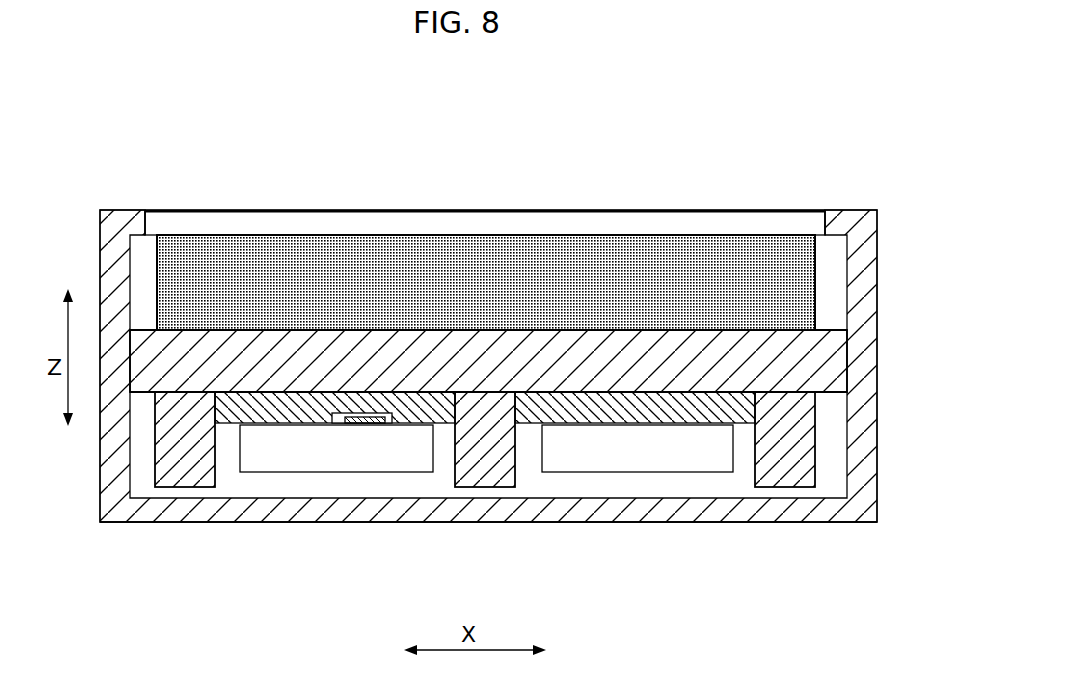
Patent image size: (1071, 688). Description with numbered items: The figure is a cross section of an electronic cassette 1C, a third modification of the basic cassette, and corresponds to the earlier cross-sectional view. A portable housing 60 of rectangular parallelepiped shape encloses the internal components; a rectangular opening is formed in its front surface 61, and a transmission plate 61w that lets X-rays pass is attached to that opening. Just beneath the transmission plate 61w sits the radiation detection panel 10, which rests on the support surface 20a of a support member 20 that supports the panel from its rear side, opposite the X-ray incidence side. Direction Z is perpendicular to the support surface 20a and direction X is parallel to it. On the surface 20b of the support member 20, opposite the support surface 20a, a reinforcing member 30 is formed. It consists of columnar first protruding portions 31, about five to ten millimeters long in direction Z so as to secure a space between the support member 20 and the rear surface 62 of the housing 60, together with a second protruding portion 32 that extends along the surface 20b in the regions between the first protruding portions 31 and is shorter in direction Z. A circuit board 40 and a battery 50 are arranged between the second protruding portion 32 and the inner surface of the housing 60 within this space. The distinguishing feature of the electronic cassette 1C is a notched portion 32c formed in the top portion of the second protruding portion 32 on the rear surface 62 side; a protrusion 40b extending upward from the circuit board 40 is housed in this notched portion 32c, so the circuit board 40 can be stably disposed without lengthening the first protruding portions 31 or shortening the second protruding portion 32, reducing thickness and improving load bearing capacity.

The electronic cassette 1C is at (567, 150).
The radiation detection panel 10 is at (536, 270).
The support member 20 is at (838, 371).
The support surface 20a is at (826, 332).
The surface 20b is at (825, 395).
The reinforcing member 30 is at (218, 597).
The first protruding portion 31 is at (172, 480).
The second protruding portion 32 is at (228, 420).
The notched portion 32c is at (388, 413).
The circuit board 40 is at (380, 467).
The protrusion 40b is at (343, 413).
The battery 50 is at (697, 468).
The housing 60 is at (714, 207).
The front surface 61 is at (122, 210).
The transmission plate 61w is at (204, 210).
The rear surface 62 is at (809, 523).